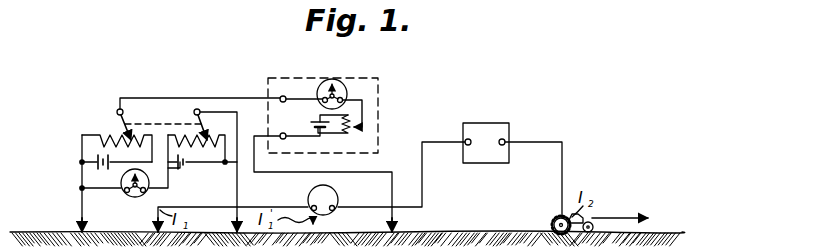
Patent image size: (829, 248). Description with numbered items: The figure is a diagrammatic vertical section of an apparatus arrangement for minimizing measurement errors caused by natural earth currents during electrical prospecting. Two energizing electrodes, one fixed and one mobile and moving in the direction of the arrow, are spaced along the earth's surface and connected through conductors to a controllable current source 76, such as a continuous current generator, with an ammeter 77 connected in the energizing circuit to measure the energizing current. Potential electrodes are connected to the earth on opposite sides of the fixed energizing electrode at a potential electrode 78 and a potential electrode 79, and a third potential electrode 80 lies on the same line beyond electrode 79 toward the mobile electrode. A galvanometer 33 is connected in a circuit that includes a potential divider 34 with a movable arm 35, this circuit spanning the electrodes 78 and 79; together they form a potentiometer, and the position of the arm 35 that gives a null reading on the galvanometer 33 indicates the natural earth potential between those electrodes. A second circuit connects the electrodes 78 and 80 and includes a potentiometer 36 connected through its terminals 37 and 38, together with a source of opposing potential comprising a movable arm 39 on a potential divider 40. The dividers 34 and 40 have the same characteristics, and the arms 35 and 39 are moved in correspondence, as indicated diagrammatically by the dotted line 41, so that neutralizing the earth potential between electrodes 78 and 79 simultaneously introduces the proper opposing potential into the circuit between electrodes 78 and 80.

The galvanometer 33 is at (128, 196).
The potential divider 34 is at (213, 150).
The movable arm 35 is at (208, 122).
The potentiometer 36 is at (380, 118).
The terminal 37 is at (283, 103).
The terminal 38 is at (286, 138).
The movable arm 39 is at (125, 120).
The potential divider 40 is at (104, 138).
The dotted line 41 is at (172, 124).
The controllable current source 76 is at (486, 143).
The ammeter 77 is at (336, 193).
The potential electrode 78 is at (80, 214).
The potential electrode 79 is at (239, 197).
The third potential electrode 80 is at (394, 211).